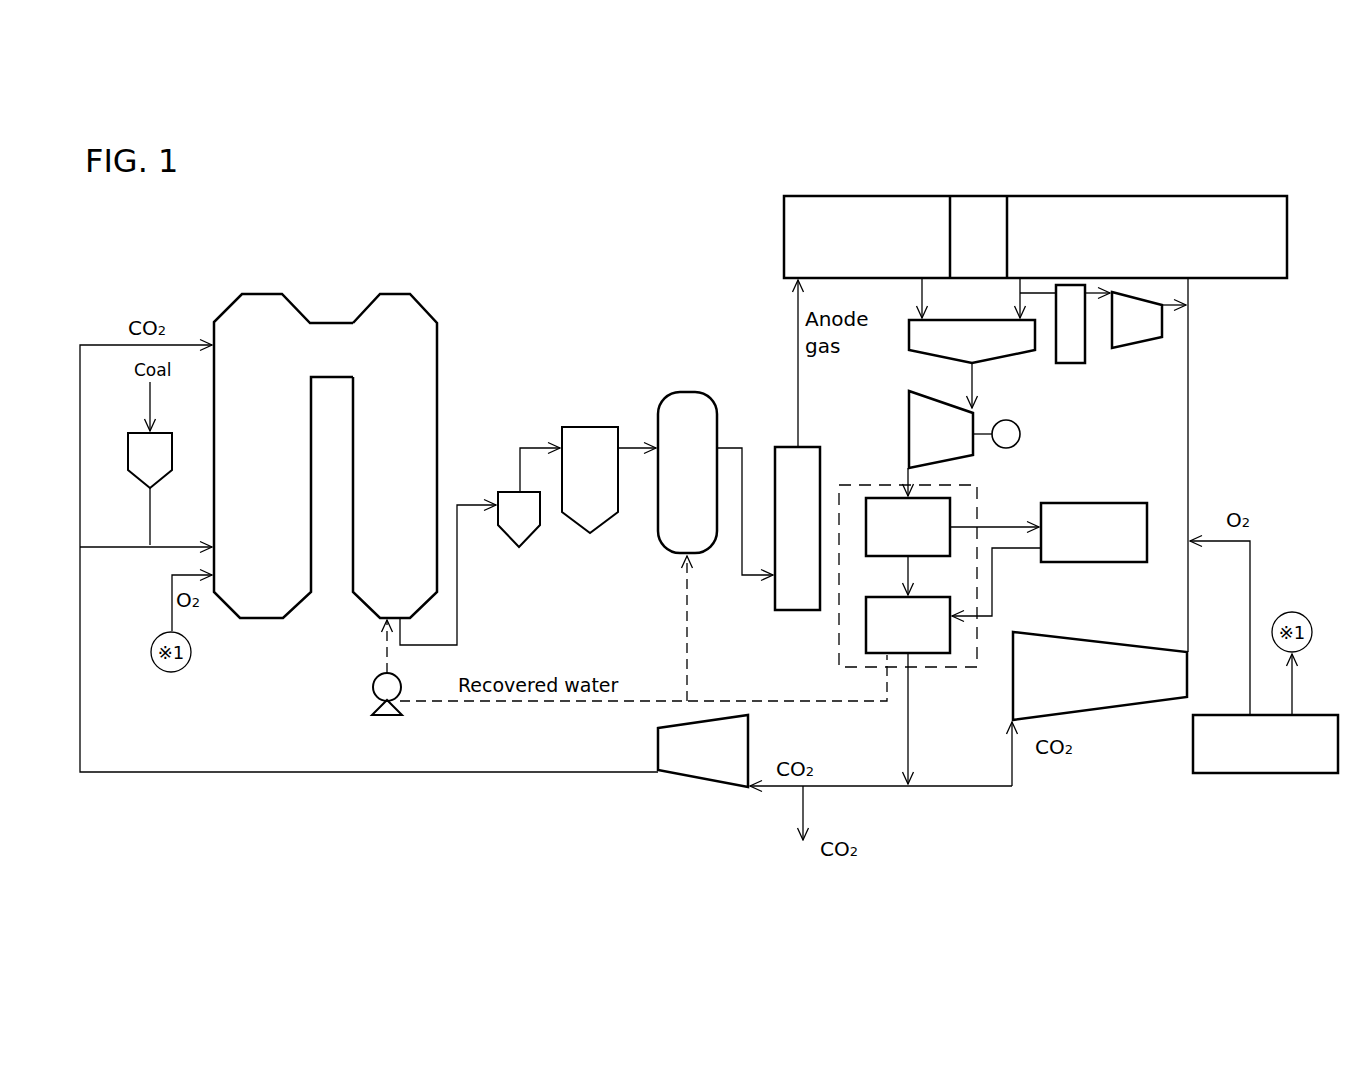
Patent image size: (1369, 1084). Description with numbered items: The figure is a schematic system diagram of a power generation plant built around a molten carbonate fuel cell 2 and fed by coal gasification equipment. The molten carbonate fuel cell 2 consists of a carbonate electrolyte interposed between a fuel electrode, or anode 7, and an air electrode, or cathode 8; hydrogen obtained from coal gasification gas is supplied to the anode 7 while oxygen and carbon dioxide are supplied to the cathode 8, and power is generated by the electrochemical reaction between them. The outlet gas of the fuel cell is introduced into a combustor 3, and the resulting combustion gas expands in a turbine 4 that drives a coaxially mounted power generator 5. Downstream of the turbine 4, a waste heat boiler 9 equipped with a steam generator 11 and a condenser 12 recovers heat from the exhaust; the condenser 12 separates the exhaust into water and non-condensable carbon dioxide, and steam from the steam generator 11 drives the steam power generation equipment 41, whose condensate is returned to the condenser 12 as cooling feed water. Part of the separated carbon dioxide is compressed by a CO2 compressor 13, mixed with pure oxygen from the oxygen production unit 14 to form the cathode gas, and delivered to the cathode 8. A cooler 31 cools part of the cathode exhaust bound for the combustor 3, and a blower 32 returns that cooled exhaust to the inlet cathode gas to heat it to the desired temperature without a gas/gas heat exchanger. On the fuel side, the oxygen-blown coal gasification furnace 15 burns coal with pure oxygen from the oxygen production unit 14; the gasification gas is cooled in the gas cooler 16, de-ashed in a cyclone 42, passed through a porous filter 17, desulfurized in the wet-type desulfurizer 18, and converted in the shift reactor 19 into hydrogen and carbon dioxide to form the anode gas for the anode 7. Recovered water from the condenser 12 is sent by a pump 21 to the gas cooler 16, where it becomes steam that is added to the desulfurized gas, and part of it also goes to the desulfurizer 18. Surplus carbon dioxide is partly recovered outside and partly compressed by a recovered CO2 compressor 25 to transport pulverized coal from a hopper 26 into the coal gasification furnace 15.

The molten carbonate fuel cell 2 is at (908, 290).
The combustor 3 is at (1012, 356).
The turbine 4 is at (974, 460).
The power generator 5 is at (1020, 438).
The fuel electrode (anode) 7 is at (784, 216).
The air electrode (cathode) 8 is at (1262, 280).
The waste heat boiler 9 is at (953, 669).
The steam generator 11 is at (866, 553).
The condenser 12 is at (874, 657).
The CO2 compressor 13 is at (1138, 700).
The oxygen production unit 14 is at (1250, 774).
The coal gasification furnace 15 is at (214, 318).
The gas cooler 16 is at (437, 397).
The porous filter 17 is at (576, 537).
The desulfurizer 18 is at (703, 392).
The shift reactor 19 is at (821, 458).
The pump 21 is at (374, 678).
The recovered CO2 compressor 25 is at (692, 772).
The hopper 26 is at (128, 448).
The cooler 31 is at (1068, 365).
The blower 32 is at (1130, 349).
The steam power generation equipment 41 is at (1146, 503).
The cyclone 42 is at (508, 552).